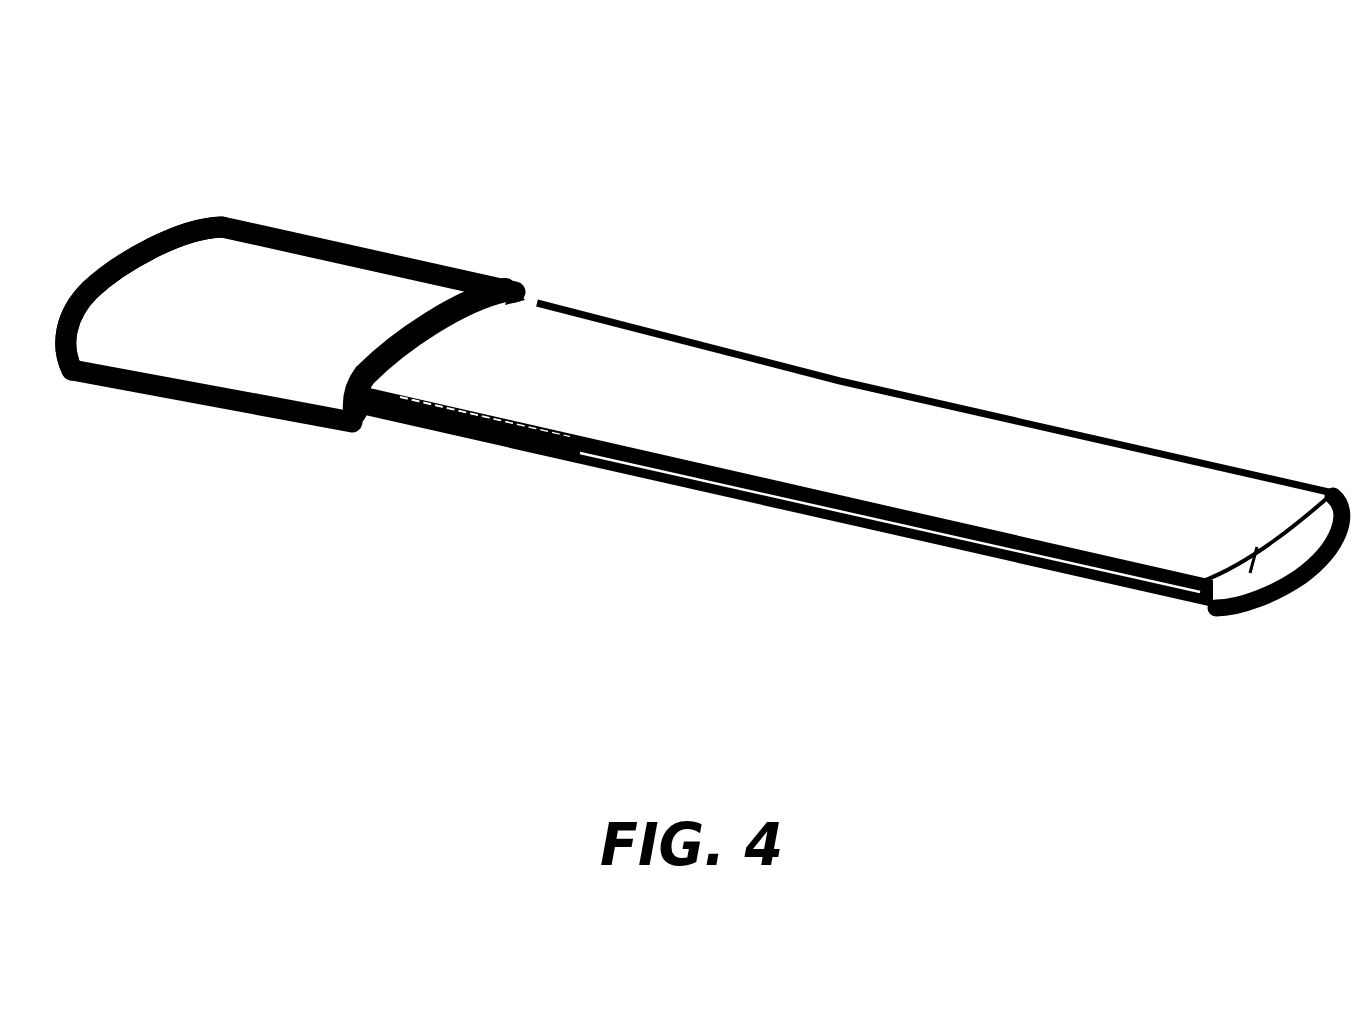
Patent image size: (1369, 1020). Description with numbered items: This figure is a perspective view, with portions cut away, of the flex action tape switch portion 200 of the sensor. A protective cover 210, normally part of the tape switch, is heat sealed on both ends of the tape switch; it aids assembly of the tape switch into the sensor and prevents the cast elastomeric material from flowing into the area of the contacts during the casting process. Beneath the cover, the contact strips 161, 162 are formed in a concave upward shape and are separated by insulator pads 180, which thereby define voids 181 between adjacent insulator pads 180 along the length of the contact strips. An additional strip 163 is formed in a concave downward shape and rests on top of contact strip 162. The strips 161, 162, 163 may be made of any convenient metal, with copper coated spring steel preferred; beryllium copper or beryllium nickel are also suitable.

The tape switch portion 200 is at (407, 253).
The protective cover 210 is at (213, 310).
The contact strip 161 is at (663, 485).
The contact strip 162 is at (1237, 610).
The additional strip 163 is at (860, 427).
The insulator pads 180 is at (493, 432).
The voids 181 is at (397, 428).